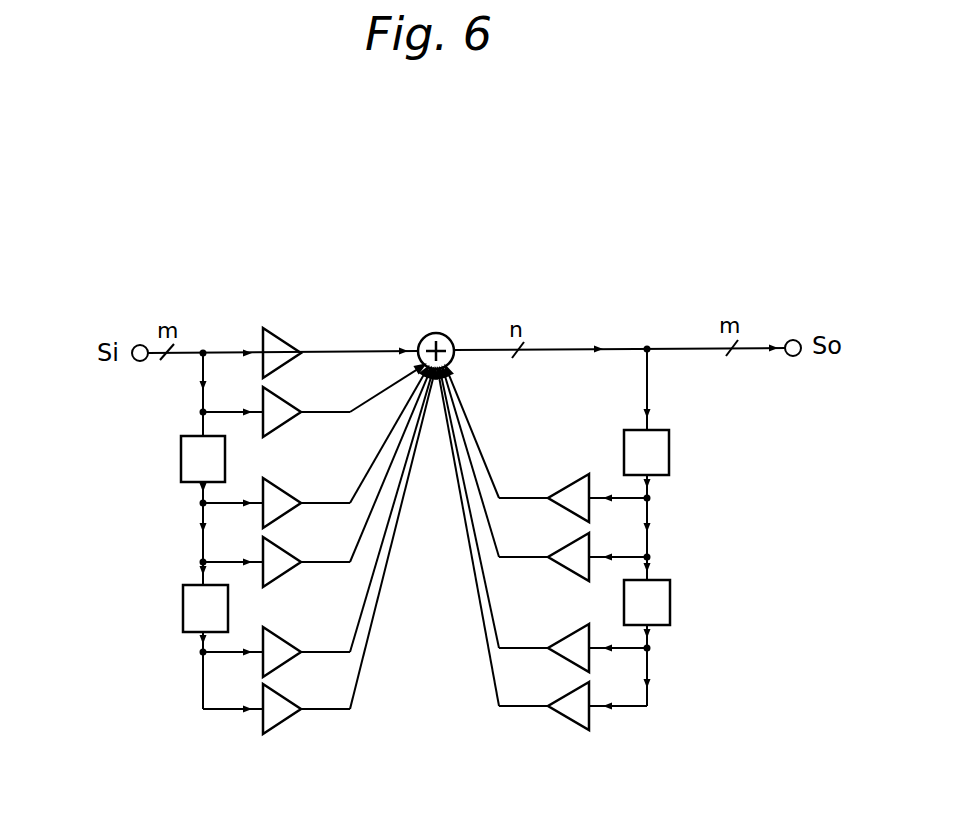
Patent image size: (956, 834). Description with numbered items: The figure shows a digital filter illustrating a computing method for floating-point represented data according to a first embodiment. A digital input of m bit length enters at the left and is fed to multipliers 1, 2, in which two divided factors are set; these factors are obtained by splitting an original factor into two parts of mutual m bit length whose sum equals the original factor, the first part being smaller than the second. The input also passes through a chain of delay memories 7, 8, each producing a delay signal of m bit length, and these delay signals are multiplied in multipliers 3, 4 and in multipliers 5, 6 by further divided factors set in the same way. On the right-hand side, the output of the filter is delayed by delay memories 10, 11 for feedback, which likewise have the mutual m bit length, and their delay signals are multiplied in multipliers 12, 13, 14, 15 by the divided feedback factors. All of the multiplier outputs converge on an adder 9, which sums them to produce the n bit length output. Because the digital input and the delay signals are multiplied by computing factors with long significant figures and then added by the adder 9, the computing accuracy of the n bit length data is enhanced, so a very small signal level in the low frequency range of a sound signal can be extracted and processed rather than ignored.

The multiplier 1 is at (262, 336).
The multiplier 2 is at (263, 398).
The multiplier 3 is at (264, 486).
The multiplier 4 is at (264, 548).
The multiplier 5 is at (264, 638).
The multiplier 6 is at (264, 696).
The delay memory 7 is at (181, 460).
The delay memory 8 is at (183, 608).
The adder 9 is at (437, 333).
The delay memory 10 is at (669, 451).
The delay memory 11 is at (670, 600).
The multiplier 12 is at (589, 475).
The multiplier 13 is at (589, 537).
The multiplier 14 is at (589, 624).
The multiplier 15 is at (589, 684).